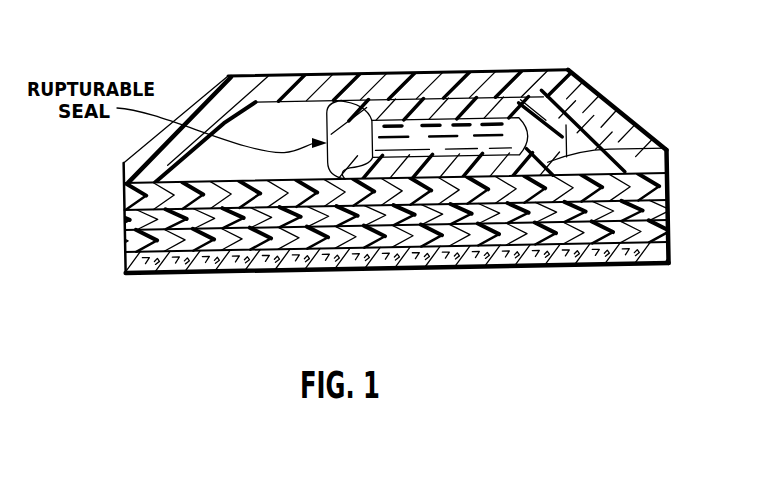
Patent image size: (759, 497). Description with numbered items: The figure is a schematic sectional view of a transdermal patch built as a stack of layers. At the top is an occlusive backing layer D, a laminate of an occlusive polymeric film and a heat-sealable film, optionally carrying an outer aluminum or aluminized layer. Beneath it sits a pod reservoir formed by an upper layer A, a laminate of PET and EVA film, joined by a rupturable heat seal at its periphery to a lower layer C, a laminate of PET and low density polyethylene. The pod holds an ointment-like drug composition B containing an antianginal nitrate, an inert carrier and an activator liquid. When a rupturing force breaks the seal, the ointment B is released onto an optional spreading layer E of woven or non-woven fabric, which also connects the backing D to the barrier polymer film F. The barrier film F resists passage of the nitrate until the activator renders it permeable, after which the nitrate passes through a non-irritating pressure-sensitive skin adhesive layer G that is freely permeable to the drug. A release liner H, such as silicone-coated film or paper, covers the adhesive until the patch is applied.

The pod layer of PET/EVA laminate A is at (590, 102).
The ointment-like drug-containing composition B is at (558, 120).
The pod layer of PET/PE laminate C is at (533, 132).
The occlusive backing layer D is at (686, 163).
The spreading layer E is at (687, 184).
The barrier polymer film F is at (687, 207).
The pressure-sensitive skin adhesive layer G is at (687, 228).
The release liner H is at (687, 250).